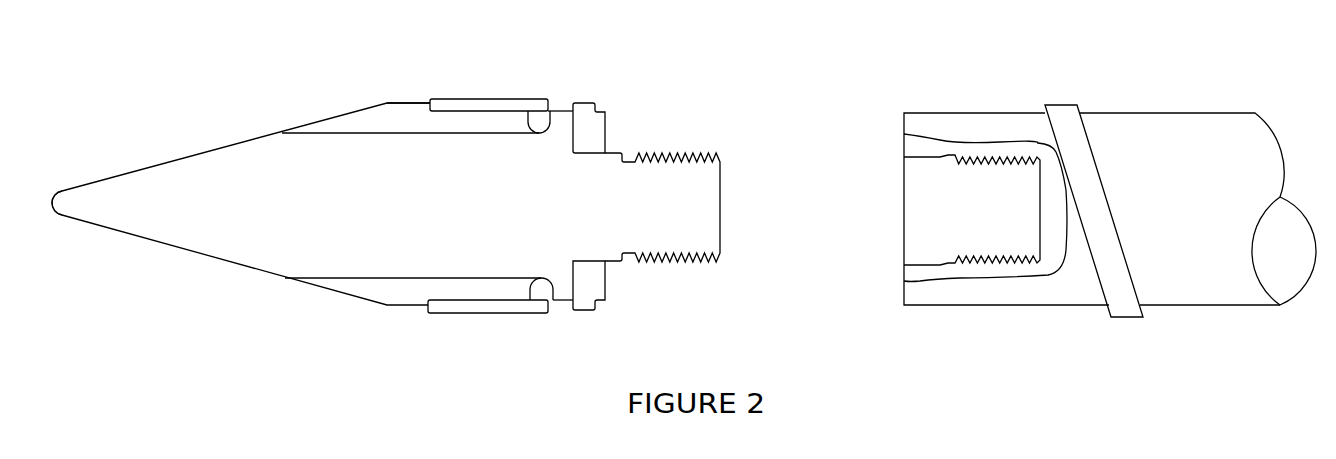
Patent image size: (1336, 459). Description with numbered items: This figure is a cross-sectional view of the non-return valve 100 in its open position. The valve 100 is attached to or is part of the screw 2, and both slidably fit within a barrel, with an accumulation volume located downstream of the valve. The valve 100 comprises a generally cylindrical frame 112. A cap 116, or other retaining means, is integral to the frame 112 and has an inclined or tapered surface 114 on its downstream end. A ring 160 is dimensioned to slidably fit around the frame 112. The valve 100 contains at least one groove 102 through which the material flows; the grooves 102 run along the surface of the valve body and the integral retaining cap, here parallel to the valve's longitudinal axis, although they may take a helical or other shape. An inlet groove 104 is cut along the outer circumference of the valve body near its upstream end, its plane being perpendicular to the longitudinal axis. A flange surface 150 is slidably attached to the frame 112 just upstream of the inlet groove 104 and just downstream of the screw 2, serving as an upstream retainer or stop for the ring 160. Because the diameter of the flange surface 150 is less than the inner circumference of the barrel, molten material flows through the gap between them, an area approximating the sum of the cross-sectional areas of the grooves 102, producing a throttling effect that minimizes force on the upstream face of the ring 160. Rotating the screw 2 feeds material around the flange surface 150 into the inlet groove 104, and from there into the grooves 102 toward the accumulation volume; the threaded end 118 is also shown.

The non-return valve 100 is at (142, 125).
The frame 112 is at (296, 193).
The tapered surface 114 is at (147, 252).
The cap 116 is at (403, 98).
The ring 160 is at (490, 95).
The groove 102 is at (423, 302).
The inlet groove 104 is at (538, 287).
The flange surface 150 is at (598, 100).
The threaded end 118 is at (675, 266).
The screw 2 is at (1183, 198).